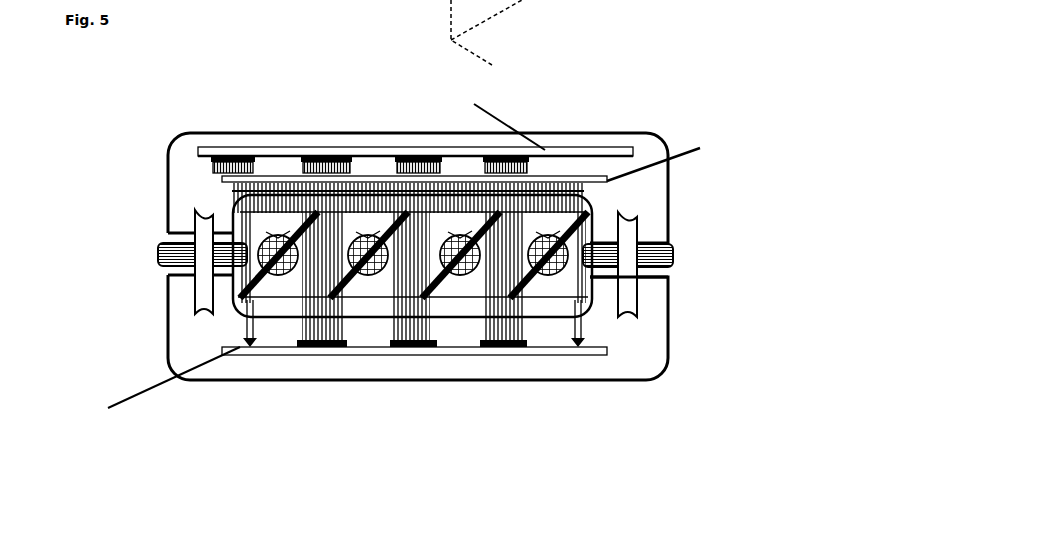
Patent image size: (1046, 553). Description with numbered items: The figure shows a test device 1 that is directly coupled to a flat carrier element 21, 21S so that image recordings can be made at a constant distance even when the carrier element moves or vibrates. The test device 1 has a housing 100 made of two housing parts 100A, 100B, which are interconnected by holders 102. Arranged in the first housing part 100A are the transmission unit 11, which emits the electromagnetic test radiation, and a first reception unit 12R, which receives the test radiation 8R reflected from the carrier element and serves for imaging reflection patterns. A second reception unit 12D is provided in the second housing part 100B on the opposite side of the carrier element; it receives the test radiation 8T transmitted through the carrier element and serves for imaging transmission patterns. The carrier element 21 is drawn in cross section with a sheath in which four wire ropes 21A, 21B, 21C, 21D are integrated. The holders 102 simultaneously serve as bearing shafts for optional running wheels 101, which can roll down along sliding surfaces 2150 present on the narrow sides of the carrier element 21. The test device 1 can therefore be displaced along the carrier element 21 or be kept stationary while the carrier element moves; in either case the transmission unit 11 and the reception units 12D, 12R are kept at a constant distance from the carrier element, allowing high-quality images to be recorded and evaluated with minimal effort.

The test device 1 is at (697, 115).
The housing 100 is at (372, 201).
The first housing part 100A is at (182, 184).
The second housing part 100B is at (180, 347).
The test radiation received along the reflection axis 8R is at (262, 167).
The test radiation received along the transmission axis 8T is at (257, 322).
The transmission unit 11 is at (605, 180).
The first reception unit 12R is at (572, 156).
The second reception unit 12D is at (527, 355).
The running wheels 101 is at (660, 259).
The holders 102 is at (632, 233).
The sliding surfaces 2150 is at (637, 280).
The carrier element 21 is at (591, 354).
The rotor 21S is at (558, 332).
The wire rope 21A is at (272, 258).
The wire rope 21B is at (365, 262).
The wire rope 21C is at (455, 262).
The wire rope 21D is at (545, 265).